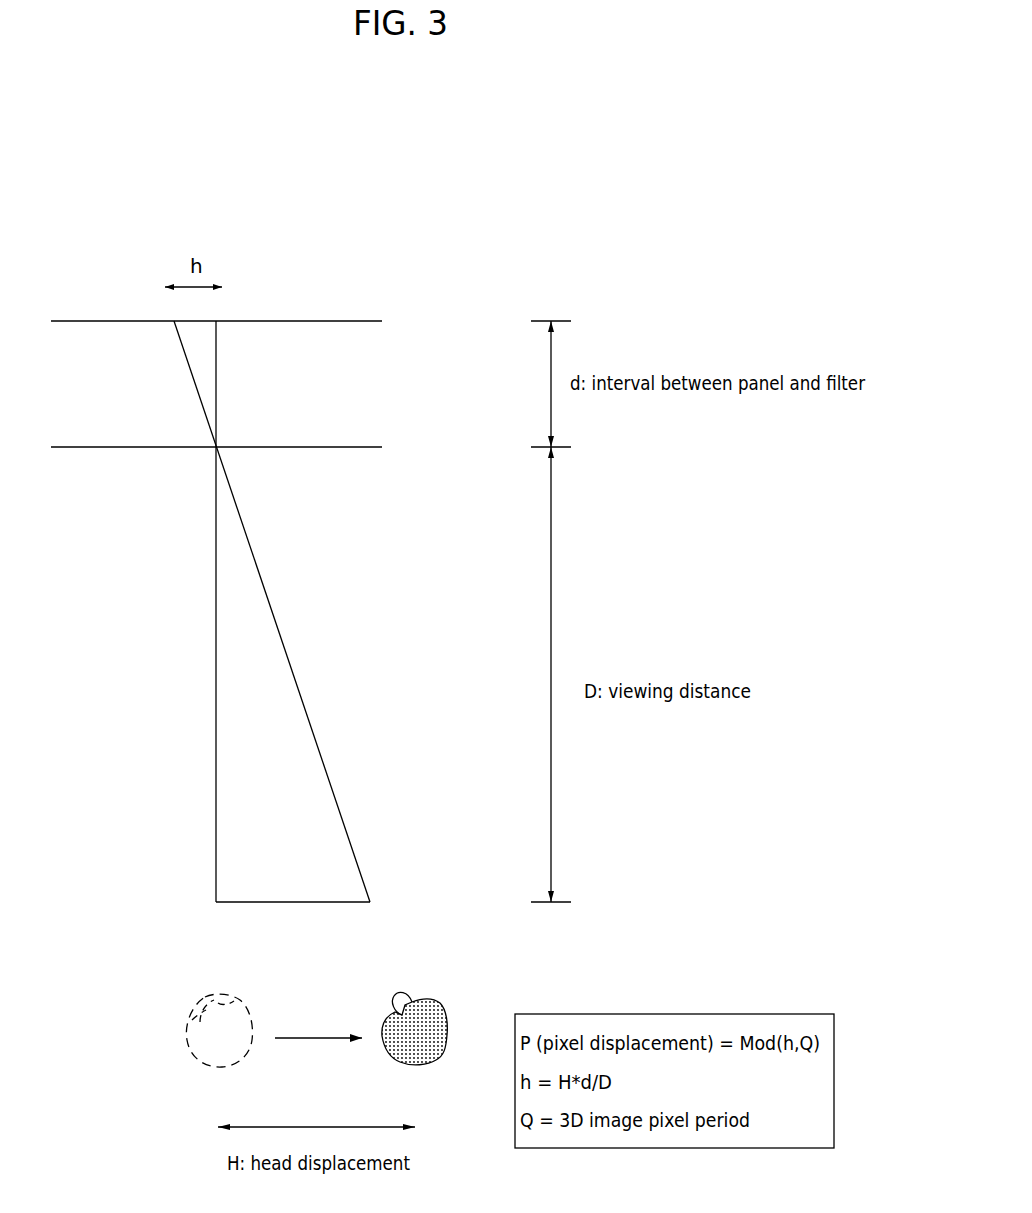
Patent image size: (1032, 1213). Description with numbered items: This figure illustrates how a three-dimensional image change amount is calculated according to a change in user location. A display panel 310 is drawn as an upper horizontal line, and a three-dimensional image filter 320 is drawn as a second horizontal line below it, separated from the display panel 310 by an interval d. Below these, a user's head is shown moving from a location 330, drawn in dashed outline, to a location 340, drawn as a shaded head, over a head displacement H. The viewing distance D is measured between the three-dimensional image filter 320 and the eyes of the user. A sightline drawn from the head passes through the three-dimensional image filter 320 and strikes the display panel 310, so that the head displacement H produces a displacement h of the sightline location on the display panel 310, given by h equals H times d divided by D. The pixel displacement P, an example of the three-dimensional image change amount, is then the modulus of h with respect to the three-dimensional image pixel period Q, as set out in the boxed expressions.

The display panel 310 is at (345, 321).
The 3D image filter 320 is at (345, 447).
The location 330 is at (245, 1018).
The location 340 is at (440, 1008).